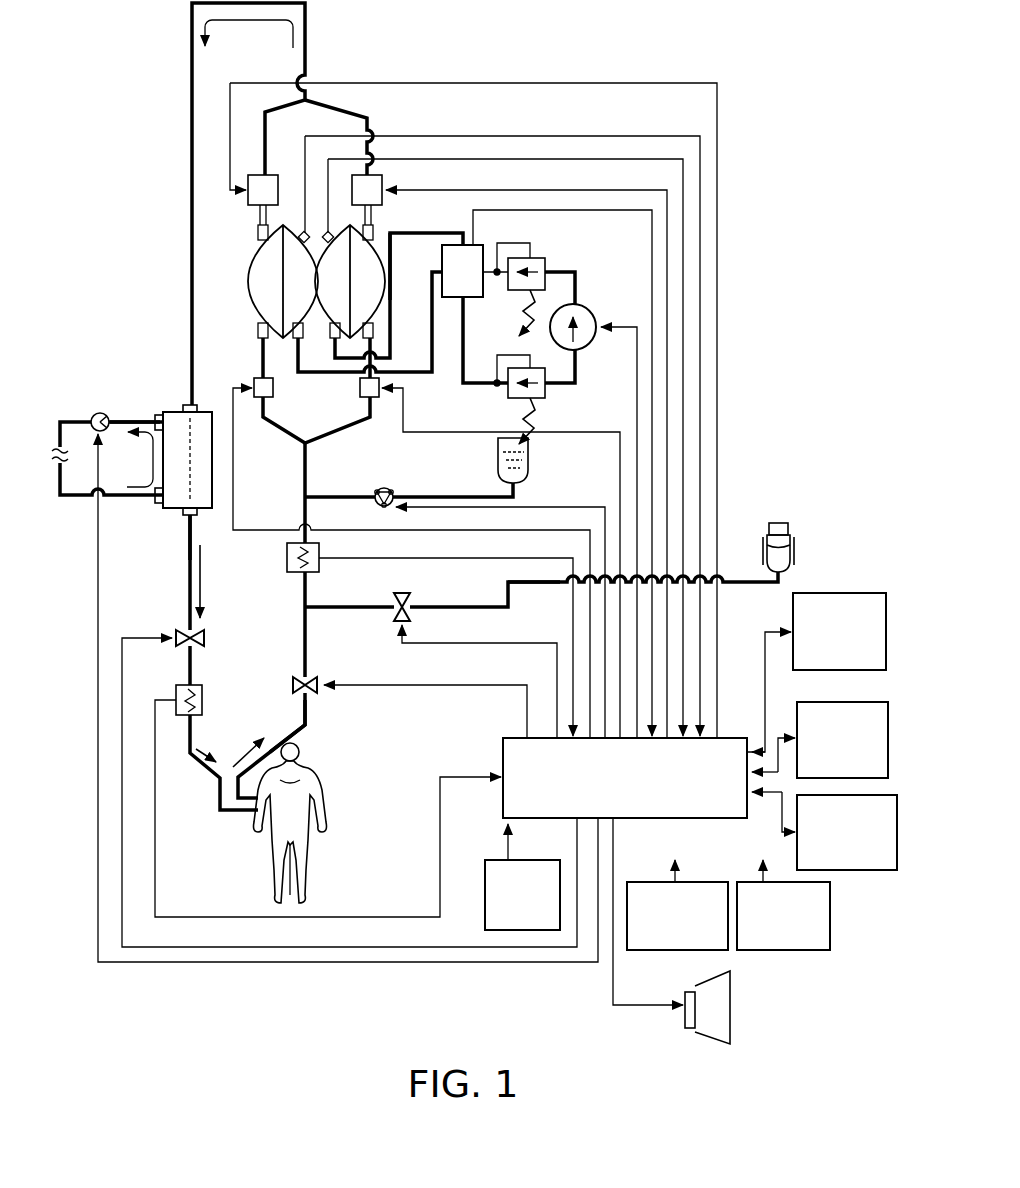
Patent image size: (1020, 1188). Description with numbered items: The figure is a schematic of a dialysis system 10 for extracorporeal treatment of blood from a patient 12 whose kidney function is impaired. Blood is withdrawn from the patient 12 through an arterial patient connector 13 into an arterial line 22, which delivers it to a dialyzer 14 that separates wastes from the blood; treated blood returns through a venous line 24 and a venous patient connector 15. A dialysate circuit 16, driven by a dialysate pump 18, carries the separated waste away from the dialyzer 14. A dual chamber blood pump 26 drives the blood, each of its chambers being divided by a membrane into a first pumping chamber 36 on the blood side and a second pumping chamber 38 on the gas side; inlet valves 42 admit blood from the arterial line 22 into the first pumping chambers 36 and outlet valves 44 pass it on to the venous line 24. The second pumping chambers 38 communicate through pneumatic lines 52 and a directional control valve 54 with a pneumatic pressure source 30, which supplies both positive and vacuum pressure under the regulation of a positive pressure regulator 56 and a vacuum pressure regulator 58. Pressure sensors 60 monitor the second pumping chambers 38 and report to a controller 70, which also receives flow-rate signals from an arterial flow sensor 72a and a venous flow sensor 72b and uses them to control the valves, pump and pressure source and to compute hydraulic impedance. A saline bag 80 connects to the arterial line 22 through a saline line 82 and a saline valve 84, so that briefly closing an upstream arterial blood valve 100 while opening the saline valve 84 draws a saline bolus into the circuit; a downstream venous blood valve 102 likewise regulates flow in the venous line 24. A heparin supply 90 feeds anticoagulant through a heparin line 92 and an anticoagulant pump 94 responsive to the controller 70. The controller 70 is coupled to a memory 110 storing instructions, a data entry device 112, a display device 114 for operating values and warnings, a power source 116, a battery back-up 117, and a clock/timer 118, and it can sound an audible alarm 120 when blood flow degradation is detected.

The dialysis system 10 is at (148, 260).
The patient 12 is at (303, 877).
The arterial patient connector 13 is at (240, 788).
The dialyzer 14 is at (176, 410).
The venous patient connector 15 is at (256, 815).
The dialysate circuit 16 is at (120, 420).
The dialysate pump 18 is at (93, 413).
The arterial line 22 is at (310, 736).
The venous line 24 is at (188, 546).
The dual chamber blood pump 26 is at (240, 282).
The pneumatic pressure source 30 is at (592, 312).
The first pumping chamber 36 is at (316, 281).
The second pumping chamber 38 is at (316, 277).
The inlet valve 42 is at (253, 380).
The outlet valve 44 is at (315, 200).
The pneumatic line 52 is at (428, 232).
The directional control valve 54 is at (477, 299).
The positive pressure regulator 56 is at (540, 257).
The vacuum pressure regulator 58 is at (510, 399).
The pressure sensor 60 is at (301, 232).
The controller 70 is at (625, 778).
The arterial flow sensor 72a is at (286, 556).
The venous flow sensor 72b is at (204, 700).
The saline bag 80 is at (788, 526).
The saline line 82 is at (530, 585).
The saline valve 84 is at (406, 600).
The heparin supply 90 is at (498, 458).
The heparin line 92 is at (522, 488).
The anticoagulant pump 94 is at (378, 506).
The upstream arterial blood valve 100 is at (292, 684).
The downstream venous blood valve 102 is at (178, 636).
The memory 110 is at (848, 870).
The data entry device 112 is at (838, 700).
The display device 114 is at (810, 593).
The power source 116 is at (780, 950).
The battery back-up 117 is at (697, 881).
The clock/timer 118 is at (522, 860).
The audible alarm 120 is at (731, 1000).